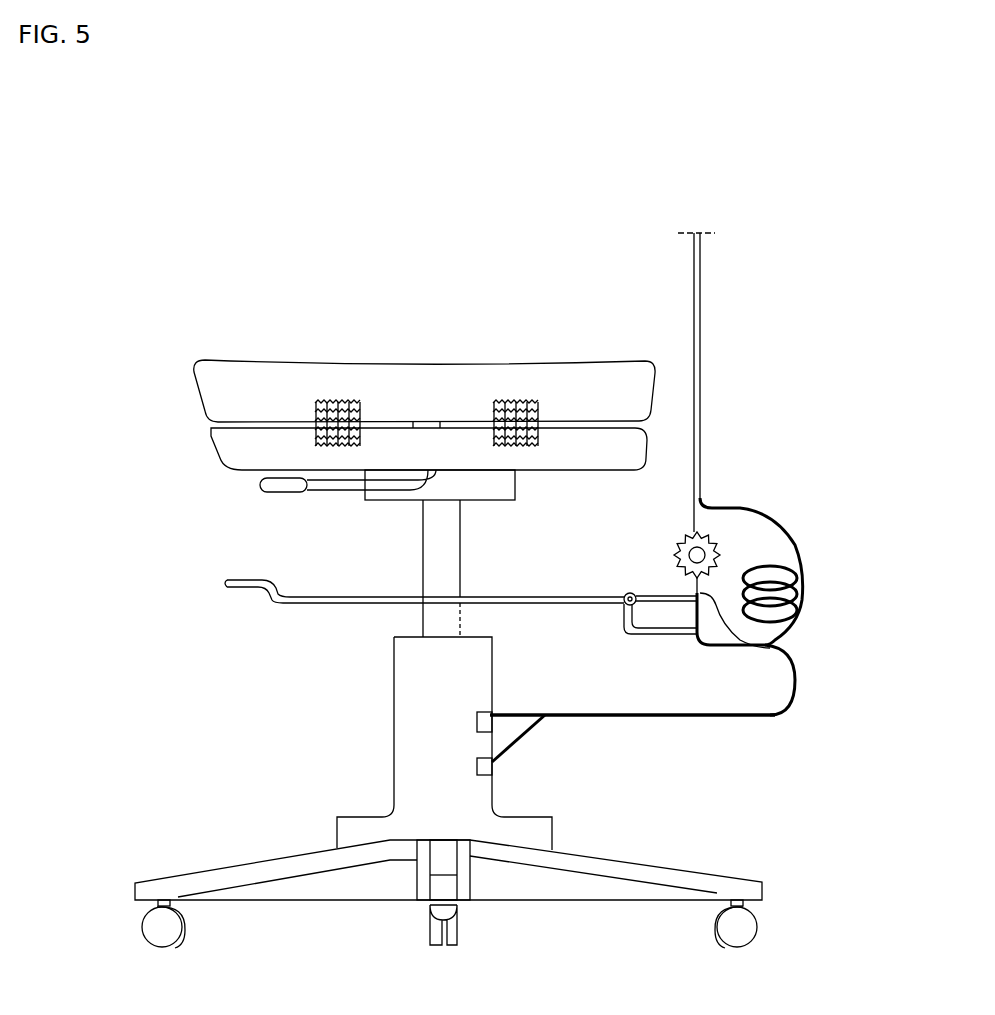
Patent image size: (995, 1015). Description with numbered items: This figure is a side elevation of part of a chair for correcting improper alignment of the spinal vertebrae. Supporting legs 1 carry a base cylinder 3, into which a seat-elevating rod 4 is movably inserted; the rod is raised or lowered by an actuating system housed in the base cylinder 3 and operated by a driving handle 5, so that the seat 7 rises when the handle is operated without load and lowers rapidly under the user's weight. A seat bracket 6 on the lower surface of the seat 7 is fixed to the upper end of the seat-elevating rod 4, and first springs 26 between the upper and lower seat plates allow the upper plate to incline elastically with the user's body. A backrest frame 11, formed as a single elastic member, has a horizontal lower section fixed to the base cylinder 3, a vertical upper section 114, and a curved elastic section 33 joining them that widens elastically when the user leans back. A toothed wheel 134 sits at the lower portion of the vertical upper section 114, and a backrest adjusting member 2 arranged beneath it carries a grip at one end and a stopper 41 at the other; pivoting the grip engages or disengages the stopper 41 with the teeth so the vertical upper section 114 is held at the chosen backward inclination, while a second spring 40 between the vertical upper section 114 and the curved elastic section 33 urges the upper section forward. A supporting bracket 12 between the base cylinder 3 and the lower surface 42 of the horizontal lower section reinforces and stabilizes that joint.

The supporting legs 1 is at (685, 875).
The backrest adjusting member 2 is at (245, 590).
The base cylinder 3 is at (393, 778).
The seat-elevating rod 4 is at (430, 622).
The driving handle 5 is at (278, 492).
The seat bracket 6 is at (497, 500).
The seat 7 is at (303, 362).
The backrest frame 11 is at (700, 293).
The supporting bracket 12 is at (520, 742).
The first springs 26 is at (497, 402).
The curved elastic section 33 is at (795, 677).
The second spring 40 is at (797, 596).
The stopper 41 is at (770, 650).
The lower surface 42 is at (690, 717).
The vertical upper section 114 is at (700, 410).
The toothed wheel 134 is at (705, 542).